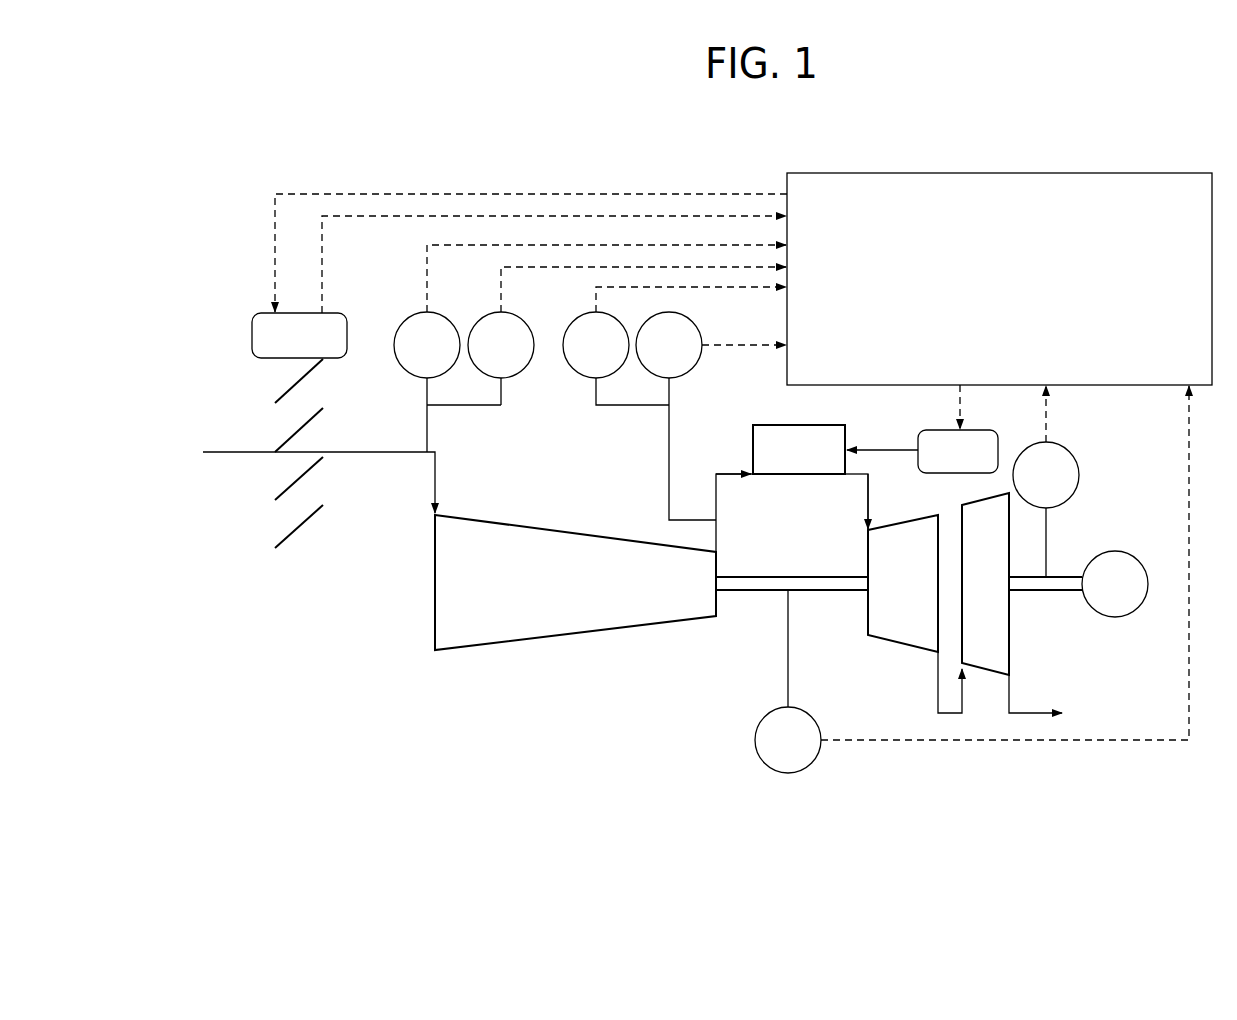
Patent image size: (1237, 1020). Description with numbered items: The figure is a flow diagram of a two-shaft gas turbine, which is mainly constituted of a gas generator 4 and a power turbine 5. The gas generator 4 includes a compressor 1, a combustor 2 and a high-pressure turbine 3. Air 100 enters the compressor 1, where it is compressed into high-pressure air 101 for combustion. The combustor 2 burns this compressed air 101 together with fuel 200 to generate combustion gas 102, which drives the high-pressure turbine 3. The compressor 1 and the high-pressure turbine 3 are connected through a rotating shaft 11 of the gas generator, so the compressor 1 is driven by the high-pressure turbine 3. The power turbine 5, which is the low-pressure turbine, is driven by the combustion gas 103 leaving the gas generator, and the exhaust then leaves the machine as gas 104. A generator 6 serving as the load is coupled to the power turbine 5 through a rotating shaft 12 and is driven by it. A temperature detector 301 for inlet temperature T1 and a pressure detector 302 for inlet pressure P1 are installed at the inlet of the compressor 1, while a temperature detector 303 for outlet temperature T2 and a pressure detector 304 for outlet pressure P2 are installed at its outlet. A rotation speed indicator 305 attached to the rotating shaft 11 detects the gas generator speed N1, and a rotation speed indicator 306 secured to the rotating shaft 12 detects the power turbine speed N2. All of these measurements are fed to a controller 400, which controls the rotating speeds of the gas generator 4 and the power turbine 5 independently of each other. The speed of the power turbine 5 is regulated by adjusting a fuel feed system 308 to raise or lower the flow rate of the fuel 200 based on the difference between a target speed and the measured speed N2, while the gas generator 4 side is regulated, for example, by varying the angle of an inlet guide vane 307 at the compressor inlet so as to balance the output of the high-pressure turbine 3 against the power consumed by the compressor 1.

The compressor 1 is at (554, 606).
The combustor 2 is at (789, 469).
The high-pressure turbine 3 is at (896, 604).
The gas generator 4 is at (788, 554).
The power turbine 5 is at (976, 604).
The generator 6 is at (1120, 552).
The rotating shaft 11 is at (750, 594).
The rotating shaft 12 is at (1050, 592).
The air 100 is at (222, 452).
The high-pressure air 101 is at (717, 497).
The combustion gas 102 is at (870, 487).
The combustion gas 103 is at (938, 690).
The exhaust gas 104 is at (1028, 713).
The fuel 200 is at (890, 450).
The temperature detector 301 is at (425, 313).
The pressure detector 302 is at (487, 315).
The temperature detector 303 is at (582, 315).
The pressure detector 304 is at (702, 325).
The rotation speed indicator 305 is at (789, 773).
The rotation speed indicator 306 is at (1080, 475).
The inlet guide vane 307 is at (252, 333).
The fuel feed system 308 is at (985, 430).
The controller 400 is at (978, 291).